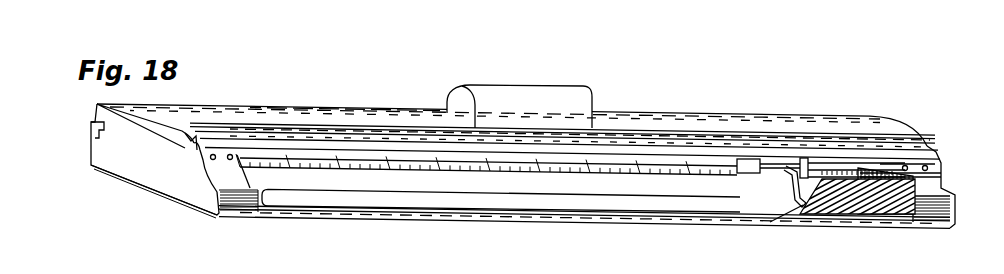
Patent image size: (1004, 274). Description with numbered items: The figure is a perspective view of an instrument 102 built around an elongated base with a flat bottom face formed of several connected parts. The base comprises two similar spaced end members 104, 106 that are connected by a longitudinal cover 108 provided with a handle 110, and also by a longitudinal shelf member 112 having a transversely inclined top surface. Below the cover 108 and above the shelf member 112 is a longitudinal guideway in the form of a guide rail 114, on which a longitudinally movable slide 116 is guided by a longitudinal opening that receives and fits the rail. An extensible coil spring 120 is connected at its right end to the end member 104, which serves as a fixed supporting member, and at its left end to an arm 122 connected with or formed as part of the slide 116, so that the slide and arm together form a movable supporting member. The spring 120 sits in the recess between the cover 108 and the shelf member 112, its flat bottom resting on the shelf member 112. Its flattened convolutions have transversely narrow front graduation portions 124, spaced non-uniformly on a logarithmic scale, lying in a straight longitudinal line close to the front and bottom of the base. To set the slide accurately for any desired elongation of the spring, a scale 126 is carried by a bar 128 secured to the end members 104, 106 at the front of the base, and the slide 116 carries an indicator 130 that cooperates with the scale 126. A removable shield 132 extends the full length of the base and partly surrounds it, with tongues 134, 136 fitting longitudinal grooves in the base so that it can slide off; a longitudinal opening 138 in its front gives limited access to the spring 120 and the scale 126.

The instrument 102 is at (653, 111).
The end member 104 is at (943, 192).
The end member 106 is at (130, 170).
The longitudinal cover 108 is at (377, 99).
The handle 110 is at (500, 93).
The shelf member 112 is at (547, 200).
The guide rail 114 is at (750, 169).
The slide 116 is at (790, 174).
The extensible coil spring 120 is at (838, 214).
The arm 122 is at (790, 212).
The graduation portions 124 is at (880, 216).
The scale 126 is at (808, 161).
The bar 128 is at (857, 168).
The indicator 130 is at (895, 165).
The shield 132 is at (171, 200).
The tongue 134 is at (110, 140).
The tongue 136 is at (185, 148).
The longitudinal opening 138 is at (290, 199).